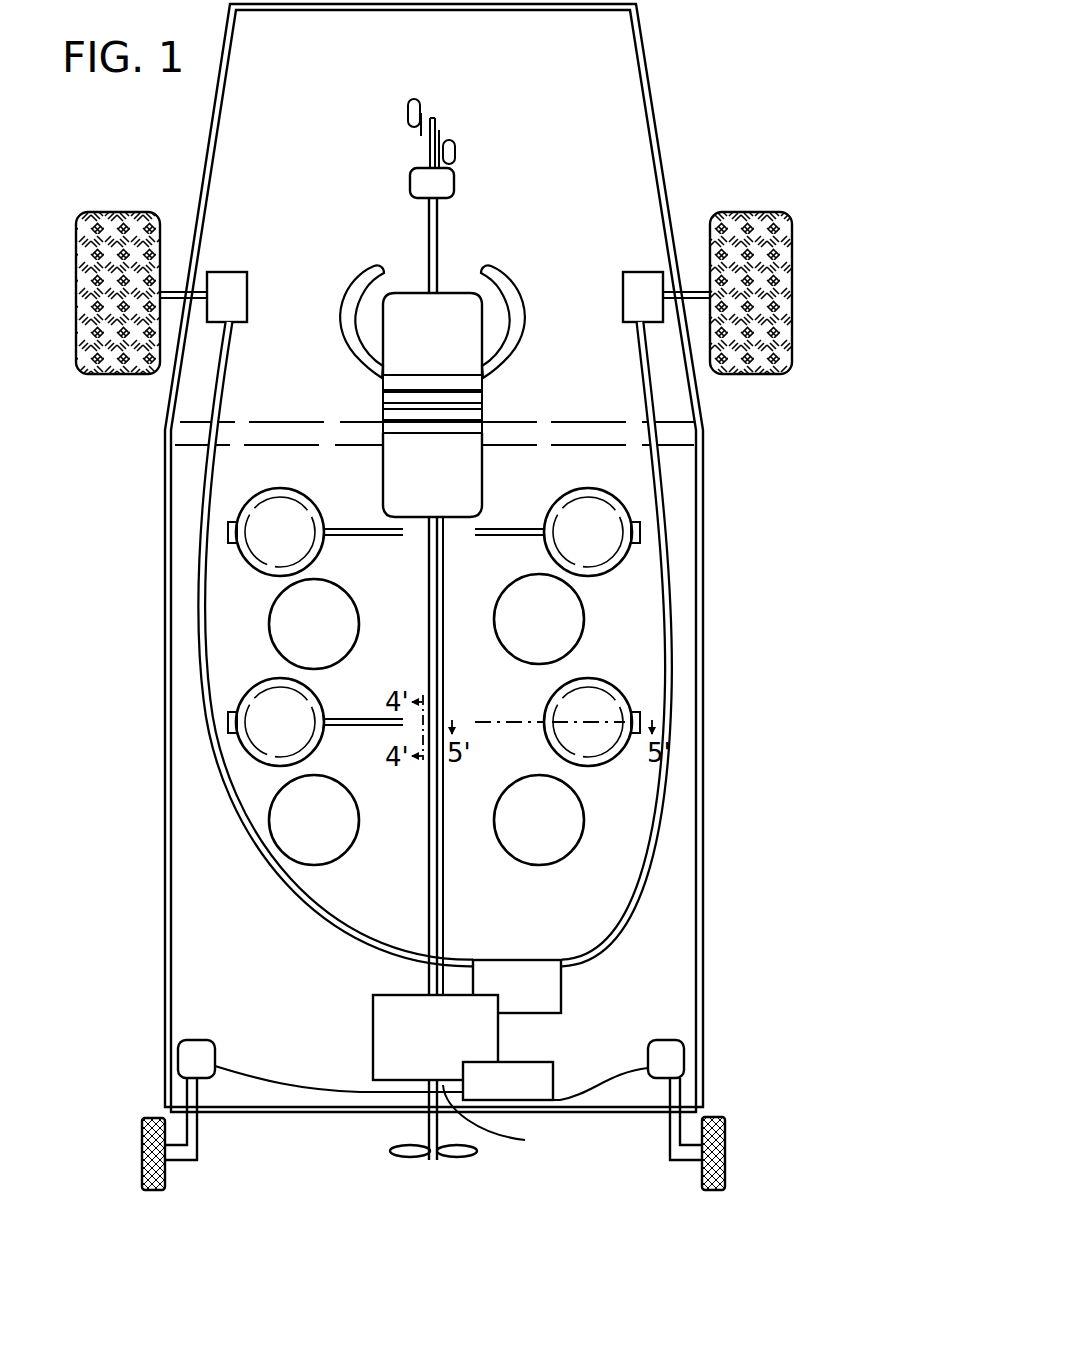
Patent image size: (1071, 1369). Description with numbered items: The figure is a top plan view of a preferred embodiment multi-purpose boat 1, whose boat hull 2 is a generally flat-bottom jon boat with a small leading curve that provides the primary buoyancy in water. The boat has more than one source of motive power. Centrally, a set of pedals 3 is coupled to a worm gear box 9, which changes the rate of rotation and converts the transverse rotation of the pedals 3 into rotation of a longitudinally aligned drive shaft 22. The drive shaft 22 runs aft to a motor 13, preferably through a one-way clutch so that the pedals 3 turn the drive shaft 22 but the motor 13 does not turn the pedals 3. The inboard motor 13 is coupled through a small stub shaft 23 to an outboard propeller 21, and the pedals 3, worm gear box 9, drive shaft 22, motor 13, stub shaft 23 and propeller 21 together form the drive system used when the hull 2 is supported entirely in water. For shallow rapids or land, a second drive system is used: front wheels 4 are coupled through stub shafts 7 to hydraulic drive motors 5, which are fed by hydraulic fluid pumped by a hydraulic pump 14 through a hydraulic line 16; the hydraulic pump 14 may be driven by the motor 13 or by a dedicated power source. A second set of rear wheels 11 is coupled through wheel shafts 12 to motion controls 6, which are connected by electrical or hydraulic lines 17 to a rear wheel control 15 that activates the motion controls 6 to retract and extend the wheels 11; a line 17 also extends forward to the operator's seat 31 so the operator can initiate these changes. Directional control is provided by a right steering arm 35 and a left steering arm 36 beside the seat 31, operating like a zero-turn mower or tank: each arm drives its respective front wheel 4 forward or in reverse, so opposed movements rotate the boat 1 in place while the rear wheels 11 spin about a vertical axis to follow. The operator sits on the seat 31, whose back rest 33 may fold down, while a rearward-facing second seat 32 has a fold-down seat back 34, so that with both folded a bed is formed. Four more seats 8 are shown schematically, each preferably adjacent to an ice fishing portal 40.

The multi-purpose boat 1 is at (660, 42).
The boat hull 2 is at (542, 114).
The pedals 3 is at (426, 150).
The wheels 4 is at (118, 212).
The hydraulic drive motors 5 is at (236, 311).
The motion controls 6 is at (214, 1058).
The stub shafts 7 is at (690, 296).
The seats 8 is at (323, 638).
The worm gear box 9 is at (452, 192).
The wheels 11 is at (142, 1150).
The wheel shafts 12 is at (196, 1099).
The motor 13 is at (447, 1049).
The hydraulic pump 14 is at (545, 999).
The rear wheel control 15 is at (535, 1092).
The hydraulic line 16 is at (318, 926).
The electrical or hydraulic lines 17 is at (444, 703).
The propeller 21 is at (470, 1155).
The drive shaft 22 is at (438, 232).
The stub shaft 23 is at (428, 1138).
The seat 31 is at (450, 347).
The second seat 32 is at (450, 484).
The back rest 33 is at (484, 388).
The fold-down seat back 34 is at (388, 425).
The right steering arm 35 is at (515, 302).
The left steering arm 36 is at (350, 298).
The ice fishing portal 40 is at (268, 584).